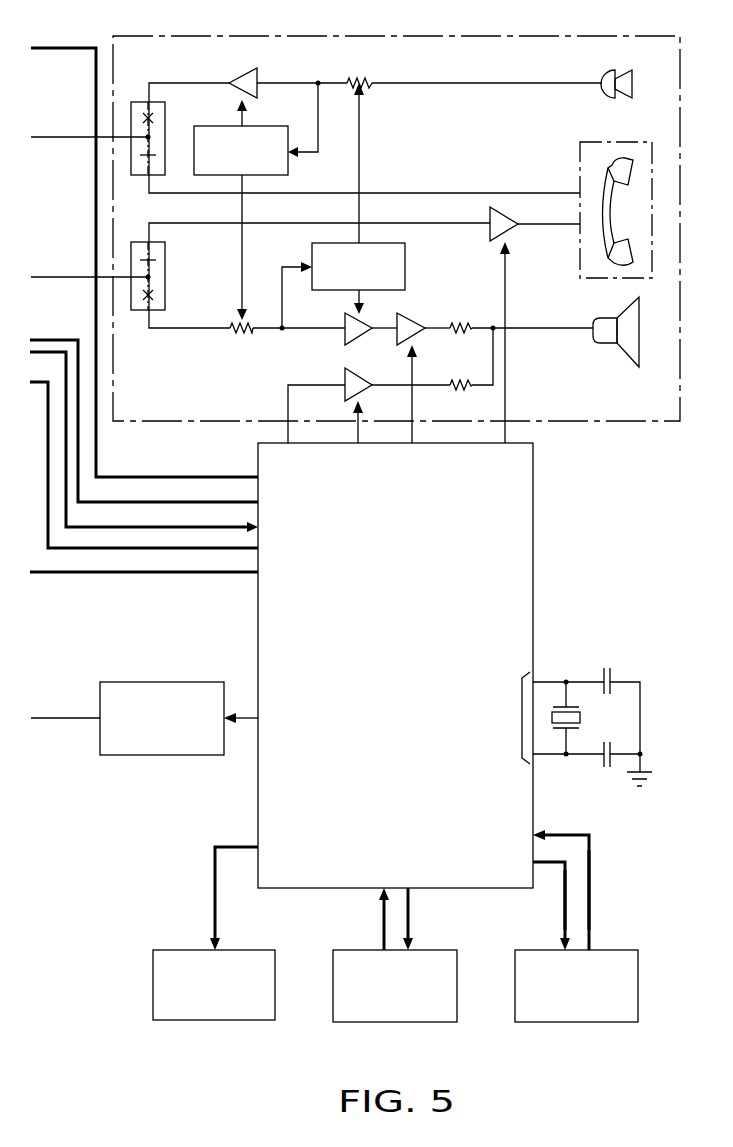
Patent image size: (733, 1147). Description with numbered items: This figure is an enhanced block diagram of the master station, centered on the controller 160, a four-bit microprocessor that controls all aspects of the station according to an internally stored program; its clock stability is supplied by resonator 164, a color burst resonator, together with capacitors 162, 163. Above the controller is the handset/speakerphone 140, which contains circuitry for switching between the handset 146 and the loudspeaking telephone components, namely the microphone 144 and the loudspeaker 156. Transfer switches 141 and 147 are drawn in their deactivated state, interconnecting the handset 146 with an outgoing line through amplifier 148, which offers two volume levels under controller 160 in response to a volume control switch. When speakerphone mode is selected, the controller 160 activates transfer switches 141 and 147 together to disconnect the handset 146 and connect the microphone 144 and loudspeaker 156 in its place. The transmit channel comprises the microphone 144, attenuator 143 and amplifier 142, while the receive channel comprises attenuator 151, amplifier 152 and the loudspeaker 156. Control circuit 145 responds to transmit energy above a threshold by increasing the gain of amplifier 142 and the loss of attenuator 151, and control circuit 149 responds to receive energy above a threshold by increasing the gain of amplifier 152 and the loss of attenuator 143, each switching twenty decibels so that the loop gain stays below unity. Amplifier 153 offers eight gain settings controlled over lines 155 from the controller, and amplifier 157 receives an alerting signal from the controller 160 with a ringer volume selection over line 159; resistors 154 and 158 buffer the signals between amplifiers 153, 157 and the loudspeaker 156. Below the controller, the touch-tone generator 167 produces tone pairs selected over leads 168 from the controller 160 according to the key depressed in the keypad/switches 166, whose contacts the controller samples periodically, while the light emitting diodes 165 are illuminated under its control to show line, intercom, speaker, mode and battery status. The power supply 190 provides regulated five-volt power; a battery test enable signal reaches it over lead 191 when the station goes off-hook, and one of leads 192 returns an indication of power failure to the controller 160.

The handset/speakerphone 140 is at (400, 36).
The transfer switch 141 is at (168, 113).
The amplifier 142 is at (239, 69).
The attenuator 143 is at (362, 75).
The microphone 144 is at (600, 74).
The control circuit 145 is at (256, 126).
The handset 146 is at (598, 142).
The transfer switch 147 is at (168, 252).
The amplifier 148 is at (513, 233).
The control circuit 149 is at (407, 268).
The attenuator 151 is at (234, 343).
The amplifier 152 is at (345, 343).
The amplifier 153 is at (398, 343).
The resistor 154 is at (461, 320).
The lines 155 is at (414, 405).
The loudspeaker 156 is at (621, 311).
The amplifier 157 is at (345, 395).
The resistor 158 is at (461, 378).
The line 159 is at (361, 408).
The controller 160 is at (533, 563).
The capacitor 162 is at (612, 672).
The capacitor 163 is at (600, 768).
The resonator 164 is at (581, 717).
The light emitting diodes 165 is at (255, 950).
The keypad/switches 166 is at (437, 950).
The touch-tone generator 167 is at (117, 681).
The leads 168 is at (248, 710).
The power supply 190 is at (617, 950).
The lead 191 is at (563, 900).
The leads 192 is at (590, 890).